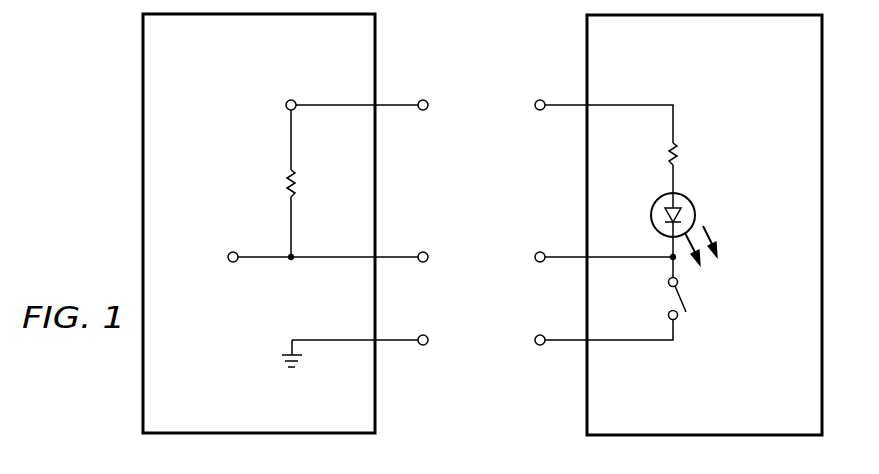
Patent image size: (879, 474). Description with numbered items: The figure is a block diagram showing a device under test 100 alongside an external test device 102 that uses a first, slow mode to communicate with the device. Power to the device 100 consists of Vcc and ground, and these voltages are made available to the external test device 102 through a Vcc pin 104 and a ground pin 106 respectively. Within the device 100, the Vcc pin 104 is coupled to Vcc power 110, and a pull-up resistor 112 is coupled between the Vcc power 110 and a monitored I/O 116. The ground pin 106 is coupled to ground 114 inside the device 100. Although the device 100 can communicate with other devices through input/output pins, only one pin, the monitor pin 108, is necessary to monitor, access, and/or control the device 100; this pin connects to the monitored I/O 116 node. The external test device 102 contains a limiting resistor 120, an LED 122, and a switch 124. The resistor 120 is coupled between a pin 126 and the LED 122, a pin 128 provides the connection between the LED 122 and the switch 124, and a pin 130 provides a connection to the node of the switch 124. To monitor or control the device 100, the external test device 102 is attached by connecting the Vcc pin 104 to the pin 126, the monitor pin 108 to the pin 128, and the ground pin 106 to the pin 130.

The device under test 100 is at (143, 157).
The external test device 102 is at (586, 275).
The Vcc pin 104 is at (426, 99).
The ground pin 106 is at (426, 346).
The monitor pin 108 is at (426, 251).
The Vcc power 110 is at (296, 109).
The pull-up resistor 112 is at (288, 178).
The ground 114 is at (282, 370).
The monitored I/O 116 is at (232, 262).
The limiting resistor 120 is at (679, 147).
The LED 122 is at (696, 217).
The switch 124 is at (689, 301).
The pin 126 is at (537, 99).
The pin 128 is at (537, 251).
The pin 130 is at (537, 346).